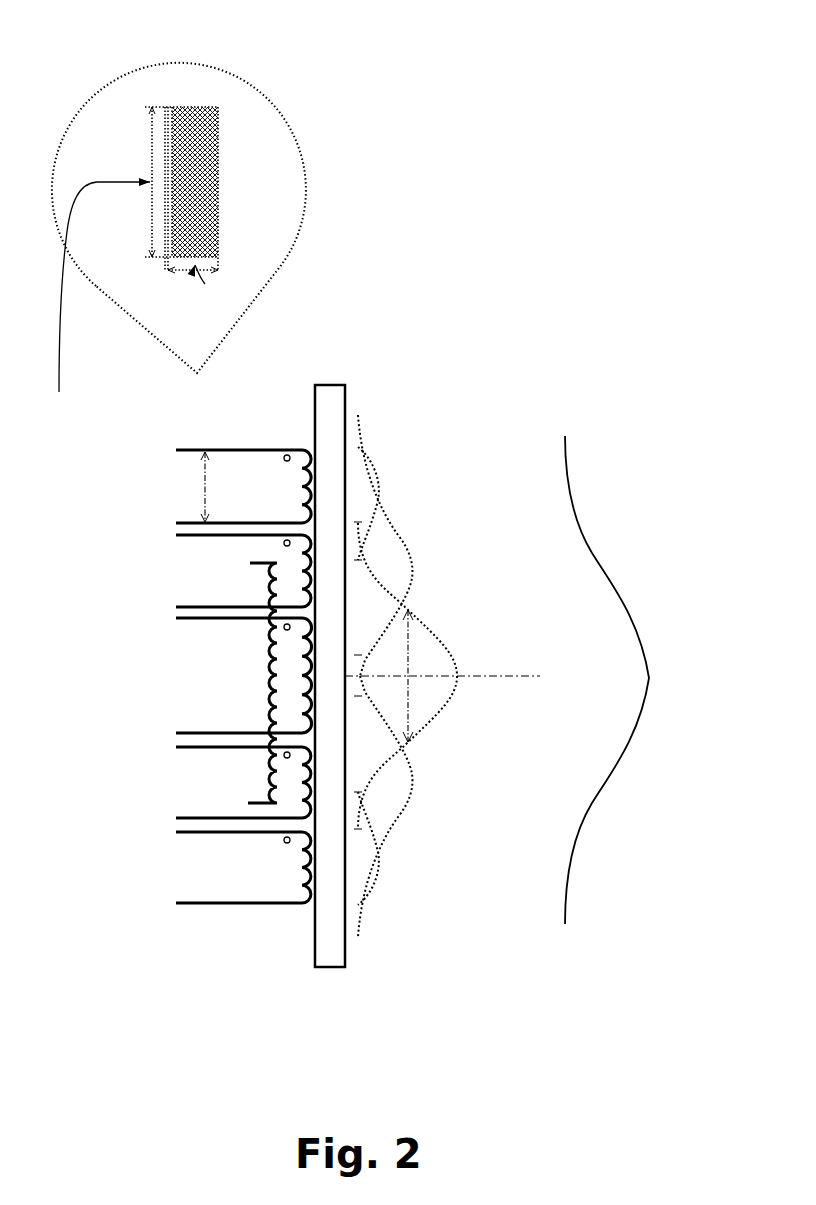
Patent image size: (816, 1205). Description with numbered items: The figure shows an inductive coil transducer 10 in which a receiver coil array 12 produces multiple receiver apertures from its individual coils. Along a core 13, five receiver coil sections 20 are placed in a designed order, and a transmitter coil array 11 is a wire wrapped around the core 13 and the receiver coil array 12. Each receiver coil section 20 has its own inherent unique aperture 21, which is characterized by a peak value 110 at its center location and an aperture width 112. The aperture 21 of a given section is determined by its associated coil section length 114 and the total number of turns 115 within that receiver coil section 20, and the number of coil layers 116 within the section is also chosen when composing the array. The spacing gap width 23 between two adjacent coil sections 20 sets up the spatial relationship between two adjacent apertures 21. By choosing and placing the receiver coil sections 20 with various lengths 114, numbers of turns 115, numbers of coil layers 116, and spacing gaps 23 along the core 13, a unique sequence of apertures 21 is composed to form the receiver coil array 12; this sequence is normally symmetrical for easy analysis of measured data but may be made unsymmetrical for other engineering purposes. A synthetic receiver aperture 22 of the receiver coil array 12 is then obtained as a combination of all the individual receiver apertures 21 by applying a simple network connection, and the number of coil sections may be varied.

The inductive coil transducer 10 is at (373, 248).
The transmitter coil array 11 is at (265, 690).
The receiver coil array 12 is at (220, 968).
The core 13 is at (334, 385).
The receiver coil section 20 is at (190, 449).
The aperture 21 is at (375, 468).
The synthetic receiver aperture 22 is at (572, 487).
The spacing gap width 23 is at (176, 529).
The peak value 110 is at (460, 665).
The aperture width 112 is at (410, 708).
The coil section length 114 is at (197, 488).
The total number of turns 115 is at (279, 484).
The number of coil layers 116 is at (148, 302).